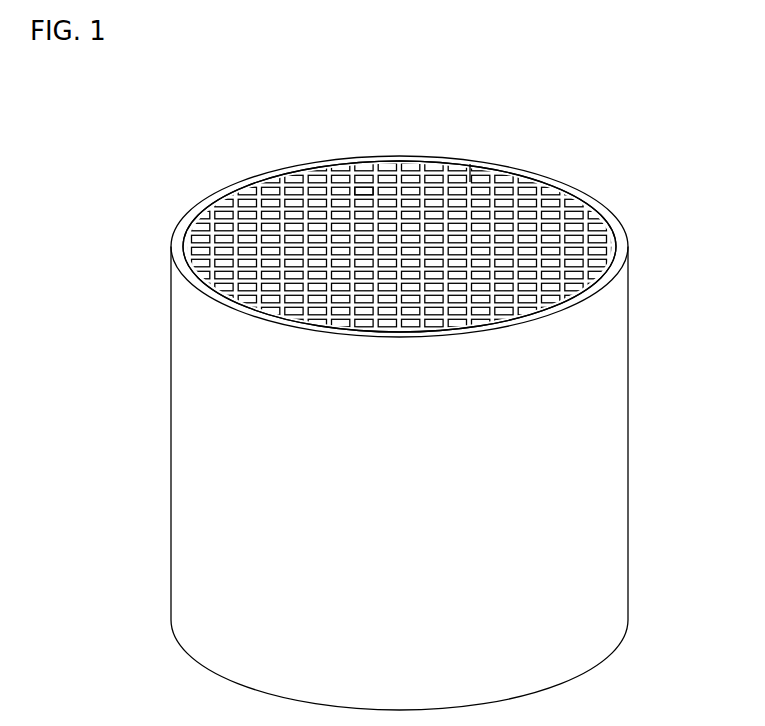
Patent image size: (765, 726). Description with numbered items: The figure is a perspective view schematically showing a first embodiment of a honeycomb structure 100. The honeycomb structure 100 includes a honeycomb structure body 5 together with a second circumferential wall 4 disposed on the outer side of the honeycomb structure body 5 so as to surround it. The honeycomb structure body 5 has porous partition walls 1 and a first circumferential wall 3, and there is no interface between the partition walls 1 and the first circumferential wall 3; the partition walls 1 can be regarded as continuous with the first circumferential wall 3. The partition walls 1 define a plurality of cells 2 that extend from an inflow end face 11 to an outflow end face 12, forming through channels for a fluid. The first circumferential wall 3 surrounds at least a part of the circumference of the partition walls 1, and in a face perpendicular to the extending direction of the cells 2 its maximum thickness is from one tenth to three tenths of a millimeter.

The honeycomb structure 100 is at (693, 72).
The partition walls 1 is at (422, 200).
The cells 2 is at (363, 195).
The first circumferential wall 3 is at (525, 182).
The second circumferential wall 4 is at (368, 400).
The honeycomb structure body 5 is at (473, 175).
The inflow end face 11 is at (215, 186).
The outflow end face 12 is at (188, 653).